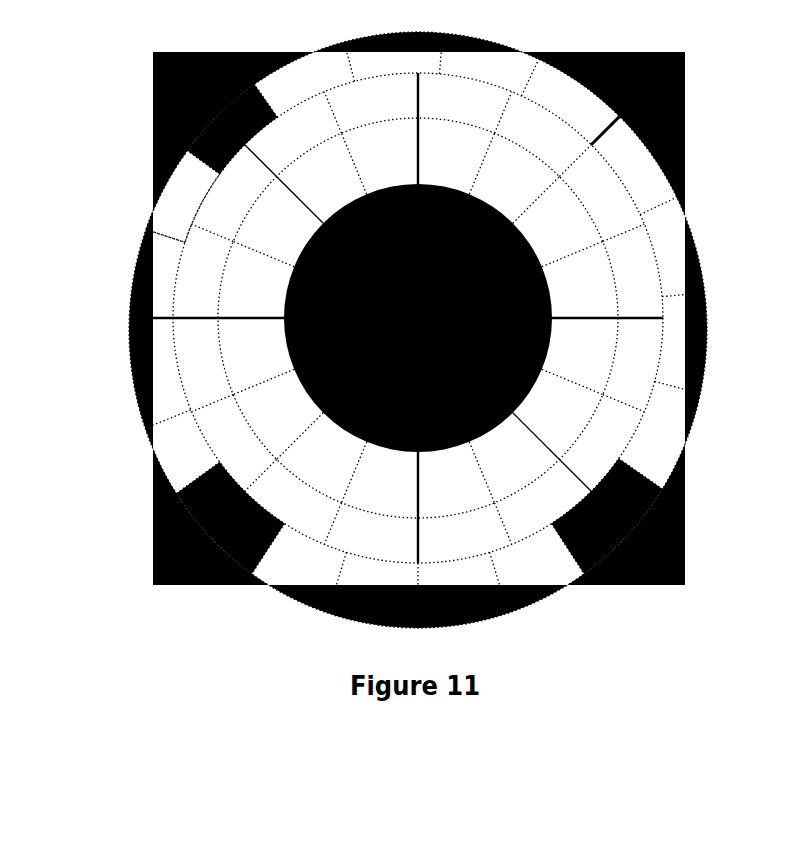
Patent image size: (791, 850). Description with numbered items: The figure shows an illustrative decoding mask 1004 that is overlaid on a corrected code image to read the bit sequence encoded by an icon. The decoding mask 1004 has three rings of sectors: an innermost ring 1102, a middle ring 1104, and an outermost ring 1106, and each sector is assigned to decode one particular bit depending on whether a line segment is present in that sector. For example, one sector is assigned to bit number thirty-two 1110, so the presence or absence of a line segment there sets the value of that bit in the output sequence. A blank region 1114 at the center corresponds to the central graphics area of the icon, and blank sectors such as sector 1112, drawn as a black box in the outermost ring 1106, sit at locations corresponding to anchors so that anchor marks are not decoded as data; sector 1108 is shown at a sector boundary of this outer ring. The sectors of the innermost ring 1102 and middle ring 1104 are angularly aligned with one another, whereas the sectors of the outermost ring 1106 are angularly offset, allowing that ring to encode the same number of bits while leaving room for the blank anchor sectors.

The decoding mask 1004 is at (161, 53).
The blank sector 1112 is at (153, 138).
The bit number 32 1110 is at (163, 199).
The sector boundary 1108 is at (148, 225).
The outermost ring 1106 is at (155, 293).
The middle ring 1104 is at (192, 333).
The innermost ring 1102 is at (243, 382).
The blank region 1114 is at (306, 391).